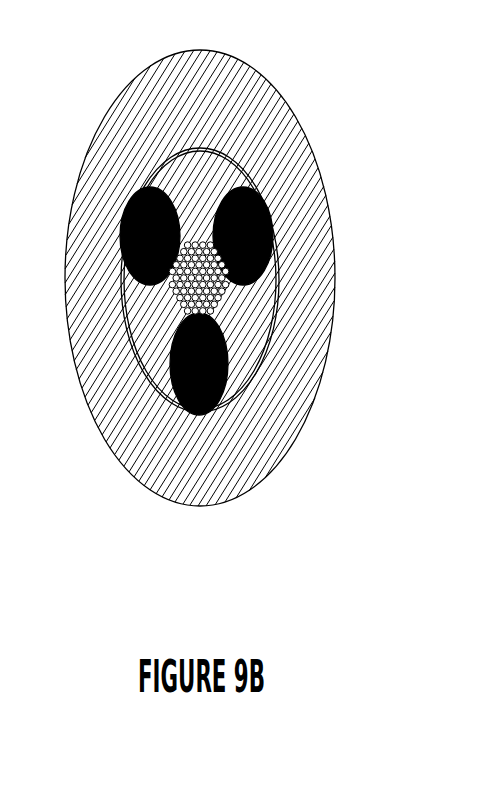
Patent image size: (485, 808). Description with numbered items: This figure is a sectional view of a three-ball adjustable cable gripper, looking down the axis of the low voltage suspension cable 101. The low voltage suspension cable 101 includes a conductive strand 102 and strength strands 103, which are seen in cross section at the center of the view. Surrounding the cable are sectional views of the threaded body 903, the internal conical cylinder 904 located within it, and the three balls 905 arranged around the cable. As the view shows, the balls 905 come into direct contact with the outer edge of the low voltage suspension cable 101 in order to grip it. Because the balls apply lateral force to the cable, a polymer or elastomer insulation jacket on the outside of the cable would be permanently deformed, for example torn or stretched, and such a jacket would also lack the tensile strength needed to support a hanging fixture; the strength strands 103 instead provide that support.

The low voltage suspension cable 101 is at (224, 302).
The conductive strand 102 is at (86, 403).
The strength strands 103 is at (167, 153).
The threaded body 903 is at (222, 503).
The internal conical cylinder 904 is at (233, 188).
The three balls 905 is at (275, 256).